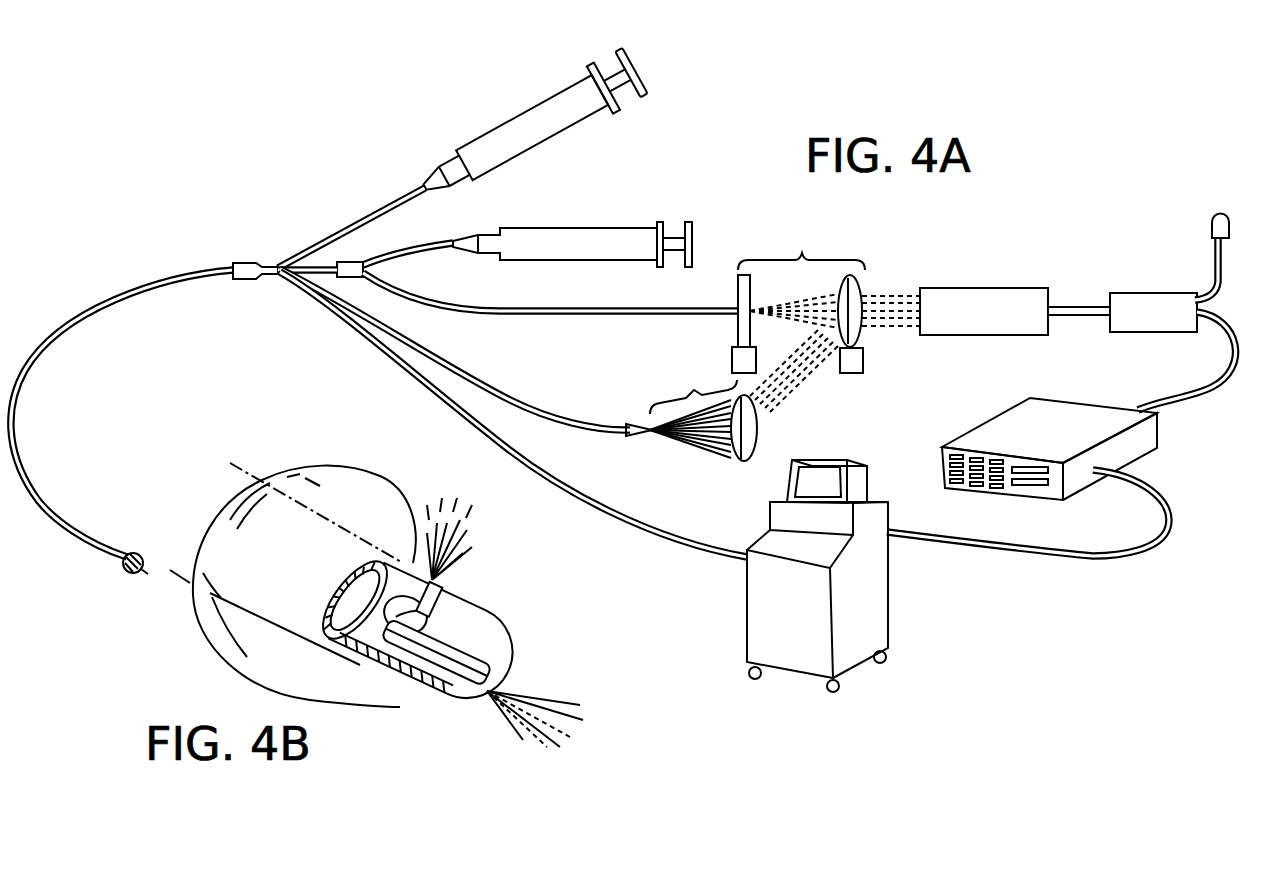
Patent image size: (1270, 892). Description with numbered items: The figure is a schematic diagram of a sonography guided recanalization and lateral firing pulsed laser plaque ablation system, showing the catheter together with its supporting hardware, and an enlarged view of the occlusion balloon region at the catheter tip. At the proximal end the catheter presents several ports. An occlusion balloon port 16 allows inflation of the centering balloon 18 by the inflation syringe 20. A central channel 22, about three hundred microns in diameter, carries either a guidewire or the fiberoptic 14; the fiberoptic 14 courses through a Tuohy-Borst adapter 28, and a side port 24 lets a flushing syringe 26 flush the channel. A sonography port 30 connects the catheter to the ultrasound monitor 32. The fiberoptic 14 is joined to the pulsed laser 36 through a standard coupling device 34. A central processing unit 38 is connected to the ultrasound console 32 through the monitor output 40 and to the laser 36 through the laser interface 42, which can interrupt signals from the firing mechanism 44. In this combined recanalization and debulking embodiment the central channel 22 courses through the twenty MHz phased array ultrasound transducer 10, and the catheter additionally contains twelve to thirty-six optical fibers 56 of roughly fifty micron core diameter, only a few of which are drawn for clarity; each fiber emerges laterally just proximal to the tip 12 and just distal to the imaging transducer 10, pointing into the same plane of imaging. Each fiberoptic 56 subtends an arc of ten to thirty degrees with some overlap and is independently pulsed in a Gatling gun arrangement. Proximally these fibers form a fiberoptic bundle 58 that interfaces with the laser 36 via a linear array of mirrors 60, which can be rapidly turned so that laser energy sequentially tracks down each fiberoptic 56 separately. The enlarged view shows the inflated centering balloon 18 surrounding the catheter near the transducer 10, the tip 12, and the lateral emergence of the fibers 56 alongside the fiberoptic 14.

In FIG. 4B, the phased array ultrasound transducer 10 is at (360, 611).
In FIG. 4B, the tip 12 is at (412, 716).
In FIG. 4A, the fiberoptic 14 is at (603, 305).
In FIG. 4B, the fiberoptic 14 is at (475, 659).
In FIG. 4A, the occlusion balloon port 16 is at (371, 206).
In FIG. 4B, the centering balloon 18 is at (224, 535).
In FIG. 4A, the inflation syringe 20 is at (497, 123).
In FIG. 4A, the central channel 22 is at (318, 279).
In FIG. 4A, the side port 24 is at (428, 239).
In FIG. 4A, the flushing syringe 26 is at (577, 226).
In FIG. 4A, the Tuohy-Borst adapter 28 is at (380, 268).
In FIG. 4A, the sonography port 30 is at (578, 495).
In FIG. 4A, the ultrasound monitor 32 is at (892, 614).
In FIG. 4A, the coupling device 34 is at (826, 315).
In FIG. 4A, the pulsed laser 36 is at (980, 286).
In FIG. 4A, the central processing unit 38 is at (959, 440).
In FIG. 4A, the monitor output 40 is at (1088, 563).
In FIG. 4A, the laser interface 42 is at (1211, 384).
In FIG. 4A, the firing mechanism 44 is at (1207, 225).
In FIG. 4A, the optical fibers 56 is at (688, 462).
In FIG. 4B, the optical fibers 56 is at (438, 609).
In FIG. 4A, the fiberoptic bundle 58 is at (553, 413).
In FIG. 4A, the linear array of mirrors 60 is at (693, 409).